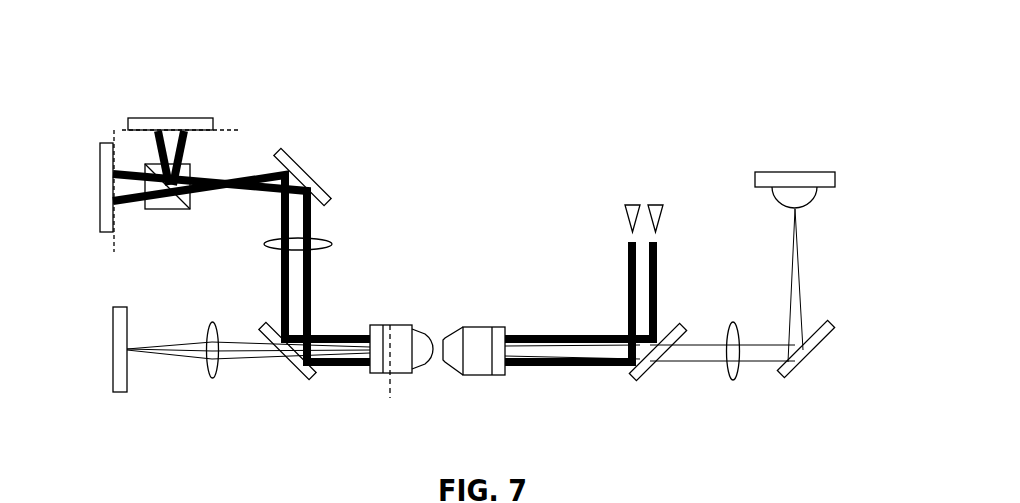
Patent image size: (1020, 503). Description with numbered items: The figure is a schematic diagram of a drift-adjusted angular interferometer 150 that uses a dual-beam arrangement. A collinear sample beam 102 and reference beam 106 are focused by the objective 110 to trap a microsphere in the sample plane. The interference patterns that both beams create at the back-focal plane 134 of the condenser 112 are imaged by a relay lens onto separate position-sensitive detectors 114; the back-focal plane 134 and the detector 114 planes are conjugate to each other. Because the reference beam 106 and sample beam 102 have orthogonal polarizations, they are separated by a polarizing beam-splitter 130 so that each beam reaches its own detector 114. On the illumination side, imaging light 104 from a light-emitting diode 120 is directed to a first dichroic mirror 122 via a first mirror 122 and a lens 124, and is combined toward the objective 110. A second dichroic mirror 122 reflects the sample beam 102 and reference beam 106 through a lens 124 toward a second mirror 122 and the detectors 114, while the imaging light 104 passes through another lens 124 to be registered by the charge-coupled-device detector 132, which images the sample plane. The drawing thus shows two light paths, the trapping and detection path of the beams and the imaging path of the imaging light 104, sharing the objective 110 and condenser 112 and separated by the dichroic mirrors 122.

The drift-adjusted angular interferometer 150 is at (749, 46).
The position-sensitive detector 114 is at (137, 118).
The polarizing beam-splitter 130 is at (191, 206).
The reference beam 106 is at (182, 150).
The sample beam 102 is at (127, 208).
The mirror 122 is at (283, 152).
The lens 124 is at (318, 237).
The back-focal plane 134 is at (390, 325).
The condenser 112 is at (404, 327).
The objective 110 is at (477, 327).
The LED 120 is at (763, 190).
The imaging light 104 is at (182, 360).
The detector 132 is at (120, 393).